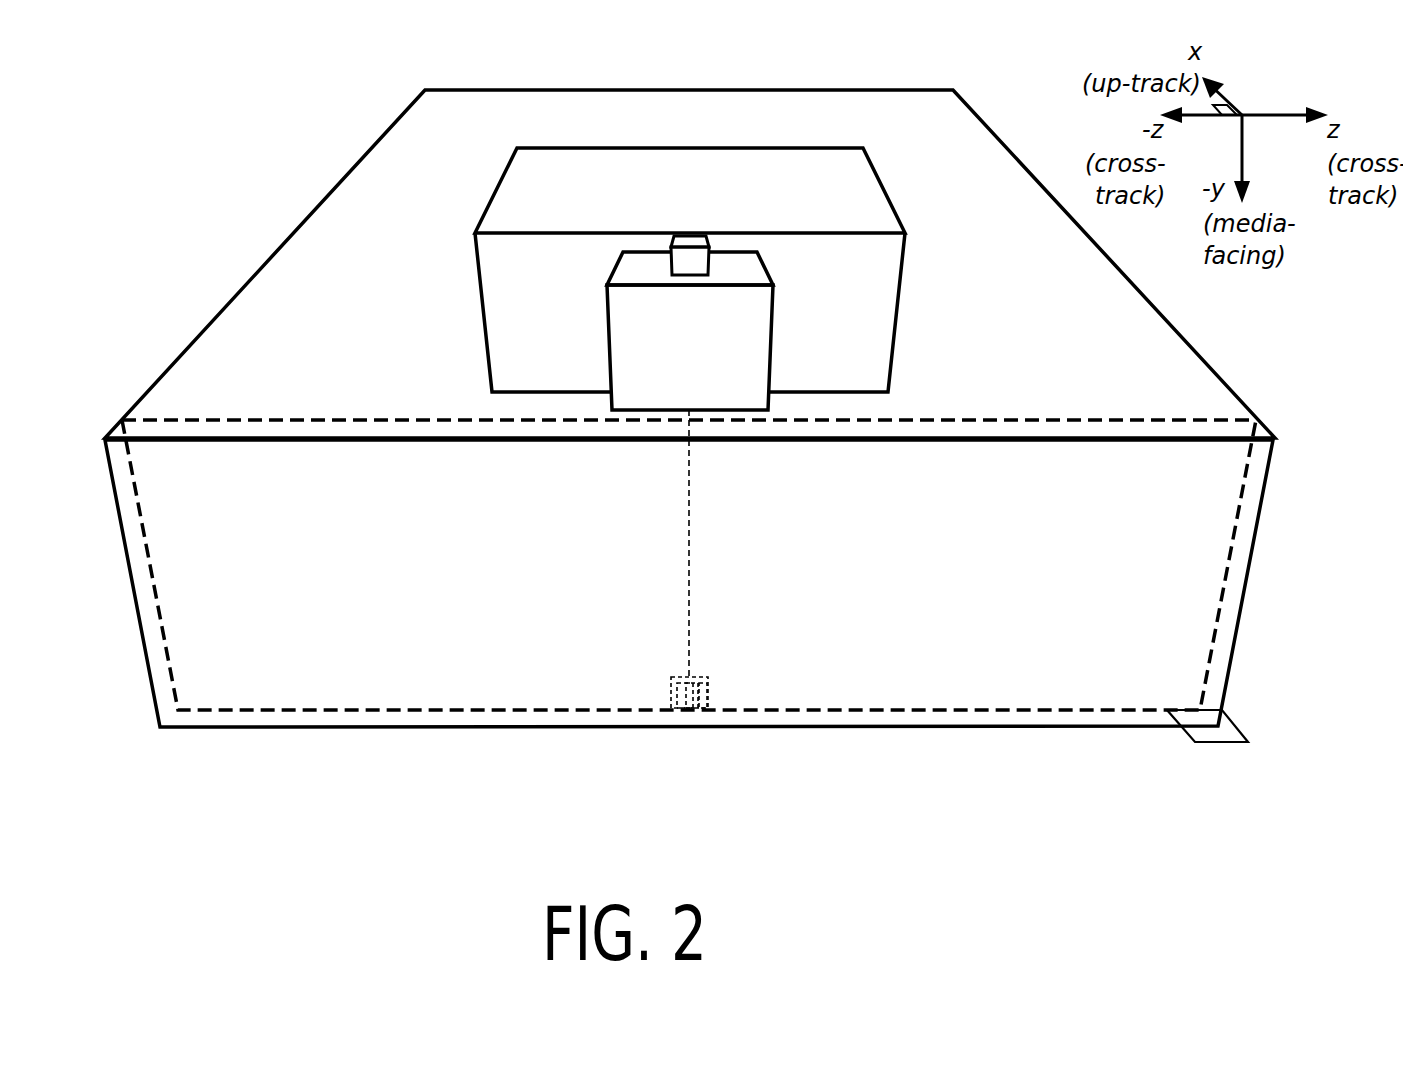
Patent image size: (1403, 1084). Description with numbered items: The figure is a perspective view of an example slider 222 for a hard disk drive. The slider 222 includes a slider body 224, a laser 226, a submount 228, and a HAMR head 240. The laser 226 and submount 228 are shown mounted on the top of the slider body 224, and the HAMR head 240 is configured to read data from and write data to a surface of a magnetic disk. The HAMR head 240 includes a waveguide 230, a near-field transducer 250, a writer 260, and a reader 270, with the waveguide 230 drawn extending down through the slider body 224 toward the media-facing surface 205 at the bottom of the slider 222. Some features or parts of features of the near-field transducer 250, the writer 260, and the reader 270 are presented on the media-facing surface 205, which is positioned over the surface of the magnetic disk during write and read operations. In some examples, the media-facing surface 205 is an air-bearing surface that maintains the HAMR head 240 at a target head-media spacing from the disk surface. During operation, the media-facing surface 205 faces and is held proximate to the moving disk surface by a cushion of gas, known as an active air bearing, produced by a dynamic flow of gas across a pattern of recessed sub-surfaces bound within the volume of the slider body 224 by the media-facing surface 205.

The slider 222 is at (250, 178).
The slider body 224 is at (948, 136).
The laser 226 is at (752, 354).
The submount 228 is at (497, 313).
The waveguide 230 is at (690, 589).
The HAMR head 240 is at (714, 657).
The near-field transducer 250 is at (692, 707).
The writer 260 is at (703, 693).
The reader 270 is at (682, 686).
The media-facing surface 205 is at (1227, 733).